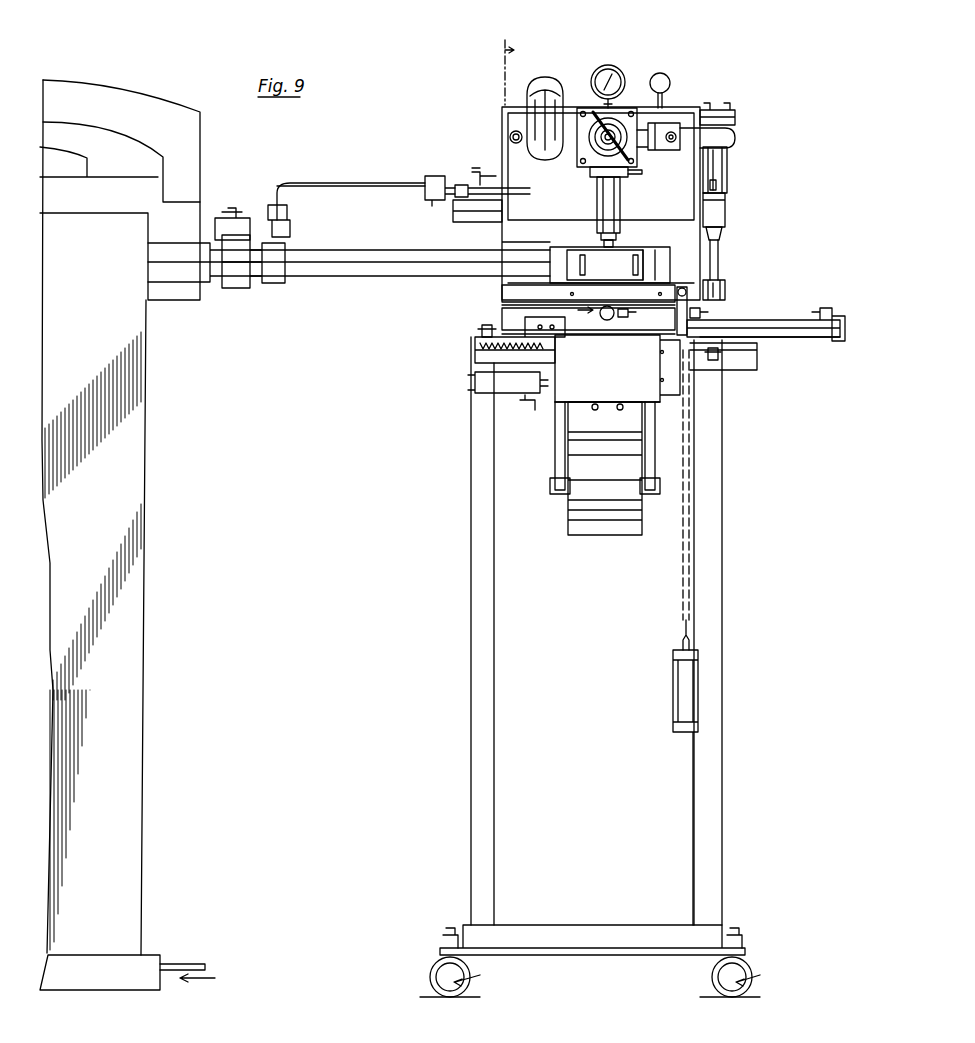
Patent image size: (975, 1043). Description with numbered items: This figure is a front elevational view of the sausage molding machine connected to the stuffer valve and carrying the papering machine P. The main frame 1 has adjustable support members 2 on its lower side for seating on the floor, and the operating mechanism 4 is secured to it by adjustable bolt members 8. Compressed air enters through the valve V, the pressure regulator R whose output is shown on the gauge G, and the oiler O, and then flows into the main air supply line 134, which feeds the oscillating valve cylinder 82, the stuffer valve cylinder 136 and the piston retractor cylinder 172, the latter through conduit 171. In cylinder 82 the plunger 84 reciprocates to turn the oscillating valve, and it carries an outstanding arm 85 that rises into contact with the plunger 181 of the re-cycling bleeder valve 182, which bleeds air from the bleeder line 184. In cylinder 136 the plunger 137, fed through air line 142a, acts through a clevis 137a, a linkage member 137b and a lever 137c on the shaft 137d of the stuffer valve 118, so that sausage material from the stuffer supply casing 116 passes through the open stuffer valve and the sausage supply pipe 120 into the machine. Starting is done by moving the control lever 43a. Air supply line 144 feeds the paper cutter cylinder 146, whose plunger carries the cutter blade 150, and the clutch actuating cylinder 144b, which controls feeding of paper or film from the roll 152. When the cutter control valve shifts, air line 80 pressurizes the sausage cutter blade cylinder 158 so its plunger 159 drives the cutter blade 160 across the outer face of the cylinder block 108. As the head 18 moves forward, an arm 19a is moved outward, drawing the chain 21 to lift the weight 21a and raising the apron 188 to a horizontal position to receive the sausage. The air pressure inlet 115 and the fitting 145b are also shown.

The main frame 1 is at (735, 776).
The adjustable support members 2 is at (611, 511).
The operating mechanism 4 is at (495, 131).
The adjustable bolt members 8 is at (487, 326).
The head 18 is at (560, 296).
The arm 19a is at (740, 338).
The chain 21 is at (683, 573).
The weight 21a is at (673, 692).
The control lever 43a is at (665, 99).
The air line 80 is at (634, 175).
The oscillating valve cylinder 82 is at (727, 158).
The plunger 84 is at (718, 248).
The outstanding arm 85 is at (725, 285).
The cylinder block 108 is at (648, 262).
The air pressure inlet 115 is at (170, 960).
The stuffer supply casing 116 is at (130, 792).
The stuffer valve 118 is at (248, 282).
The sausage supply pipe 120 is at (345, 275).
The main air supply line 134 is at (522, 145).
The stuffer valve cylinder 136 is at (478, 202).
The plunger 137 is at (432, 182).
The clevis 137a is at (372, 183).
The linkage member 137b is at (322, 192).
The lever 137c is at (263, 220).
The shaft 137d is at (235, 218).
The air line 142a is at (474, 185).
The air supply line 144 is at (838, 312).
The clutch actuating cylinder 144b is at (545, 356).
The fitting 145b is at (702, 313).
The paper cutter cylinder 146 is at (785, 320).
The cutter blade 150 is at (527, 320).
The roll 152 is at (630, 535).
The sausage cutter blade cylinder 158 is at (622, 206).
The plunger 159 is at (607, 243).
The cutter blade 160 is at (576, 262).
The conduit 171 is at (632, 313).
The piston retractor cylinder 172 is at (604, 320).
The plunger 181 is at (727, 235).
The re-cycling bleeder valve 182 is at (745, 205).
The bleeder line 184 is at (718, 184).
The apron 188 is at (582, 394).
The oiler O is at (545, 82).
The pressure regulator R is at (594, 108).
The gauge G is at (622, 76).
The valve V is at (690, 158).
The papering machine P is at (546, 456).